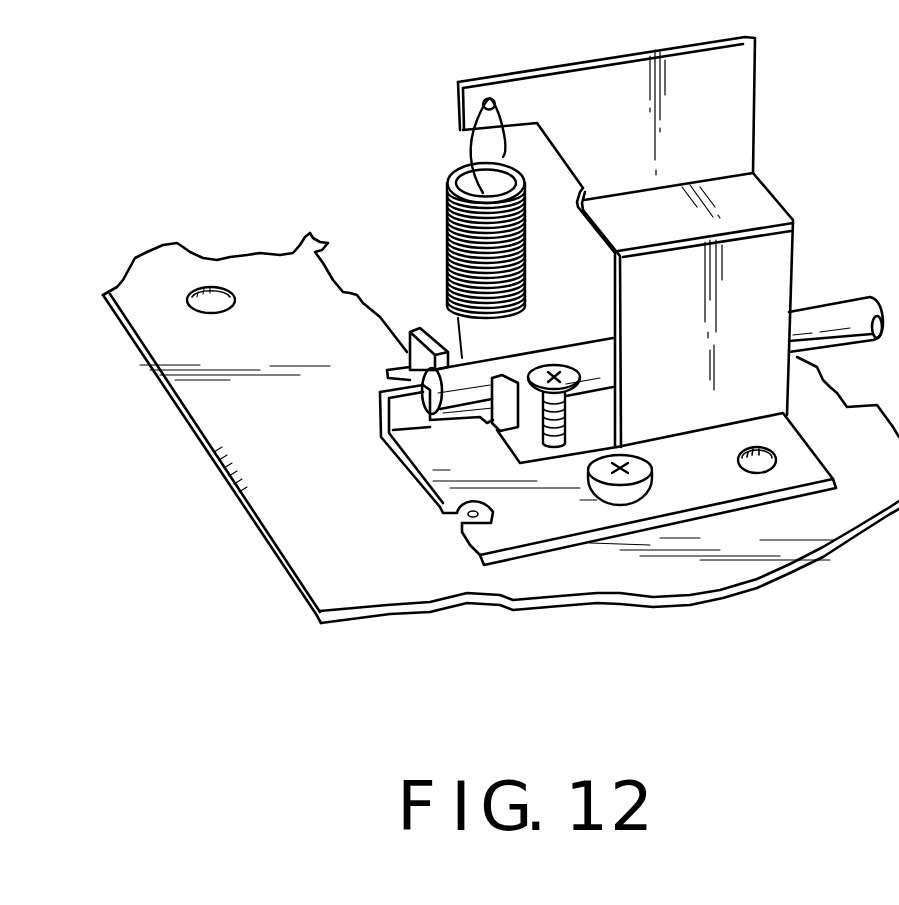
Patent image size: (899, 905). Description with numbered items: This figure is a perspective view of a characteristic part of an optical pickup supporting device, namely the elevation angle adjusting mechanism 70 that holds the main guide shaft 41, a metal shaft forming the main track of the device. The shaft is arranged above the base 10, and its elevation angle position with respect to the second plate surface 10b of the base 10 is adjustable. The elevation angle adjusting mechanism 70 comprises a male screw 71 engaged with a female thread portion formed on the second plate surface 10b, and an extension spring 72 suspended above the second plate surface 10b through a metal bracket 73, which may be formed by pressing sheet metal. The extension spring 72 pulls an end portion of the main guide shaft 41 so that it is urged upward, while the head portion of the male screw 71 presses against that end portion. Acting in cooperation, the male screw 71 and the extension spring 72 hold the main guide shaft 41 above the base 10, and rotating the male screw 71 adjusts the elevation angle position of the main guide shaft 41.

The base 10 is at (237, 398).
The second plate surface 10b is at (197, 270).
The main guide shaft 41 is at (837, 313).
The elevation angle adjusting mechanism 70 is at (637, 672).
The male screw 71 is at (557, 443).
The extension spring 72 is at (447, 250).
The metal bracket 73 is at (692, 482).